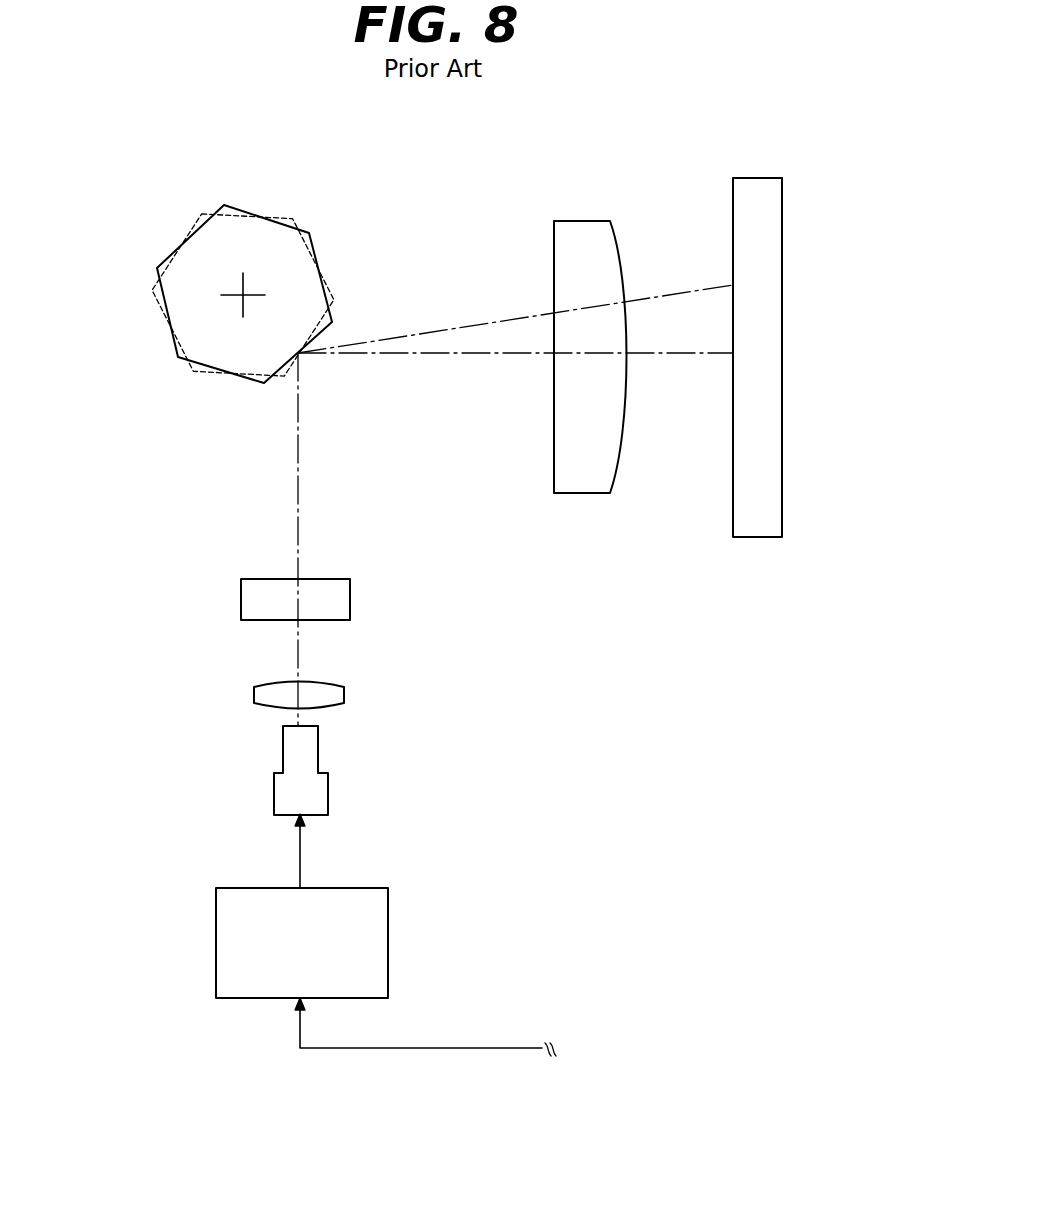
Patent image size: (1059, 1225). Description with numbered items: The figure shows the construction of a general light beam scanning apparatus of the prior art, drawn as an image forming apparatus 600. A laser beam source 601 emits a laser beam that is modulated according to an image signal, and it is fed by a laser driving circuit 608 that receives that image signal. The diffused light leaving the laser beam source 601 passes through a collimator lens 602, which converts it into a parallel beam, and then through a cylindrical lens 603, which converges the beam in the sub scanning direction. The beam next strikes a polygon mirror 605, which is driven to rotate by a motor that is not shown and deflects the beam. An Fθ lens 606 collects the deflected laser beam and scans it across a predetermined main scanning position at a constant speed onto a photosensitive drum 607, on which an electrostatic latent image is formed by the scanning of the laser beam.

The image forming apparatus 600 is at (788, 163).
The laser beam source 601 is at (277, 792).
The collimator lens 602 is at (256, 693).
The cylindrical lens 603 is at (253, 608).
The polygon mirror 605 is at (183, 258).
The Fθ lens 606 is at (560, 270).
The photosensitive drum 607 is at (745, 257).
The laser driving circuit 608 is at (255, 998).